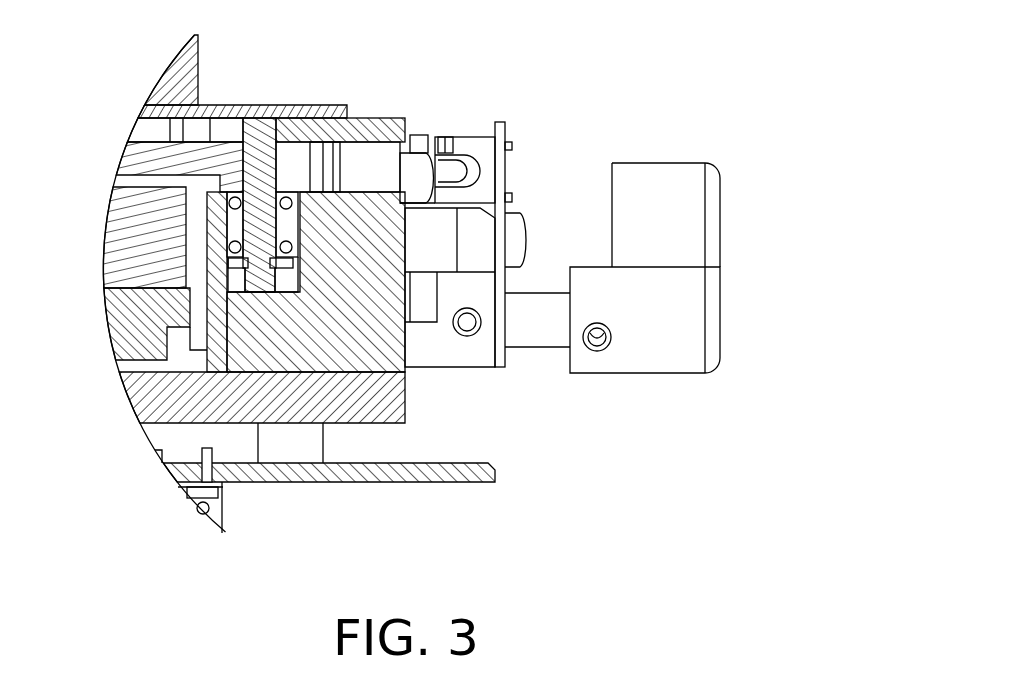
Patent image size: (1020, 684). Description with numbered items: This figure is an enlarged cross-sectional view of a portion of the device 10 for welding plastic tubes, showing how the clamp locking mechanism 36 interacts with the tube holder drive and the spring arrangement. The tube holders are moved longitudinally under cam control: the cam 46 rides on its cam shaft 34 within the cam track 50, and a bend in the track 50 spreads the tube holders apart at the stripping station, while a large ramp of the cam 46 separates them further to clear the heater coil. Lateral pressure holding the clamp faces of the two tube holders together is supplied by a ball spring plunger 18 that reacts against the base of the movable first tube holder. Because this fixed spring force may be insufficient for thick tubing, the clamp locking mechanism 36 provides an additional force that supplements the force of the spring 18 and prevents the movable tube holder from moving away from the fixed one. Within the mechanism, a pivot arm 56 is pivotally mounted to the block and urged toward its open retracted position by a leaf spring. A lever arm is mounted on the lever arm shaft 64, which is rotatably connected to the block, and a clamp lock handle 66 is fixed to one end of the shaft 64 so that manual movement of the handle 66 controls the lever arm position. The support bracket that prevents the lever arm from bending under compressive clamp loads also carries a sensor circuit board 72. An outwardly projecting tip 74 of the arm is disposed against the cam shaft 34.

The device for welding plastic tubes 10 is at (130, 66).
The cam shaft 34 is at (262, 134).
The pivot arm 56 is at (353, 121).
The ball spring plunger 18 is at (315, 172).
The outwardly projecting tip 74 is at (451, 167).
The sensor circuit board 72 is at (505, 172).
The clamp locking mechanism 36 is at (592, 120).
The clamp lock handle 66 is at (690, 202).
The lever arm shaft 64 is at (537, 333).
The cam track 50 is at (288, 280).
The cam 46 is at (260, 272).